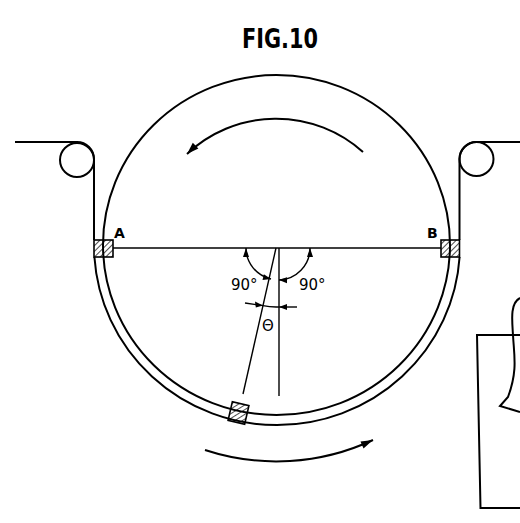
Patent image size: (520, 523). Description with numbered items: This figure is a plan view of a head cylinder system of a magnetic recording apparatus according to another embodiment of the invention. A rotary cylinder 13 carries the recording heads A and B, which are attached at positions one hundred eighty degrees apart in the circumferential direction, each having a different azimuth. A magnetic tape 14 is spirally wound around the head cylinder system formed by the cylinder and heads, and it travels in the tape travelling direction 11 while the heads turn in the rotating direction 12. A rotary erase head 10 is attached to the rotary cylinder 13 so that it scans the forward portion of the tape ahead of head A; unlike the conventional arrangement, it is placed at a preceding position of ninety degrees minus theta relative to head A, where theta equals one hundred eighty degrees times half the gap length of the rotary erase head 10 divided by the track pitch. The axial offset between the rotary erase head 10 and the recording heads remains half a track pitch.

The rotary erase head 10 is at (229, 402).
The tape travelling direction 11 is at (345, 455).
The rotating direction 12 is at (239, 126).
The rotary cylinder 13 is at (408, 136).
The magnetic tape 14 is at (377, 398).